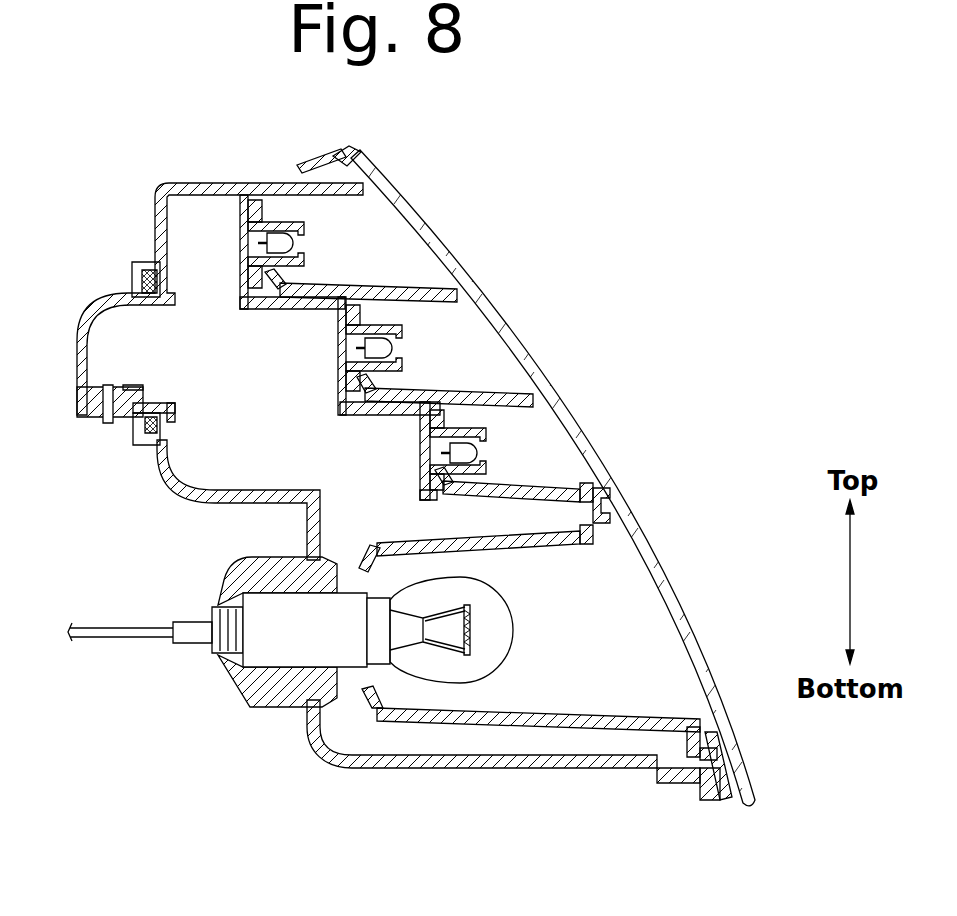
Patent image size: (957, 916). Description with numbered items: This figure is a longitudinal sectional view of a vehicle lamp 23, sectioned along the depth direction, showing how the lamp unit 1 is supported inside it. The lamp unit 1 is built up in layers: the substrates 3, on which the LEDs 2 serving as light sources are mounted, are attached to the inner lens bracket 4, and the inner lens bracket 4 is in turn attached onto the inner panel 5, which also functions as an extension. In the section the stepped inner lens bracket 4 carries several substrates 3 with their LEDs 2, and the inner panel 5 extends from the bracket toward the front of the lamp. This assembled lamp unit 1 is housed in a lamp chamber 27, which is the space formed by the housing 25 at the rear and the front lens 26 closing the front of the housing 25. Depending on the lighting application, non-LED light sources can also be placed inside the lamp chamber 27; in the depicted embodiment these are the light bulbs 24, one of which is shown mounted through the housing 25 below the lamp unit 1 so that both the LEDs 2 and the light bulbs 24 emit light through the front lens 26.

The lamp unit 1 is at (318, 383).
The LEDs 2 is at (295, 245).
The substrates 3 is at (244, 222).
The inner lens bracket 4 is at (277, 310).
The inner panel 5 is at (347, 197).
The vehicle lamp 23 is at (597, 240).
The light bulbs 24 is at (502, 612).
The housing 25 is at (203, 183).
The front lens 26 is at (395, 195).
The lamp chamber 27 is at (195, 243).